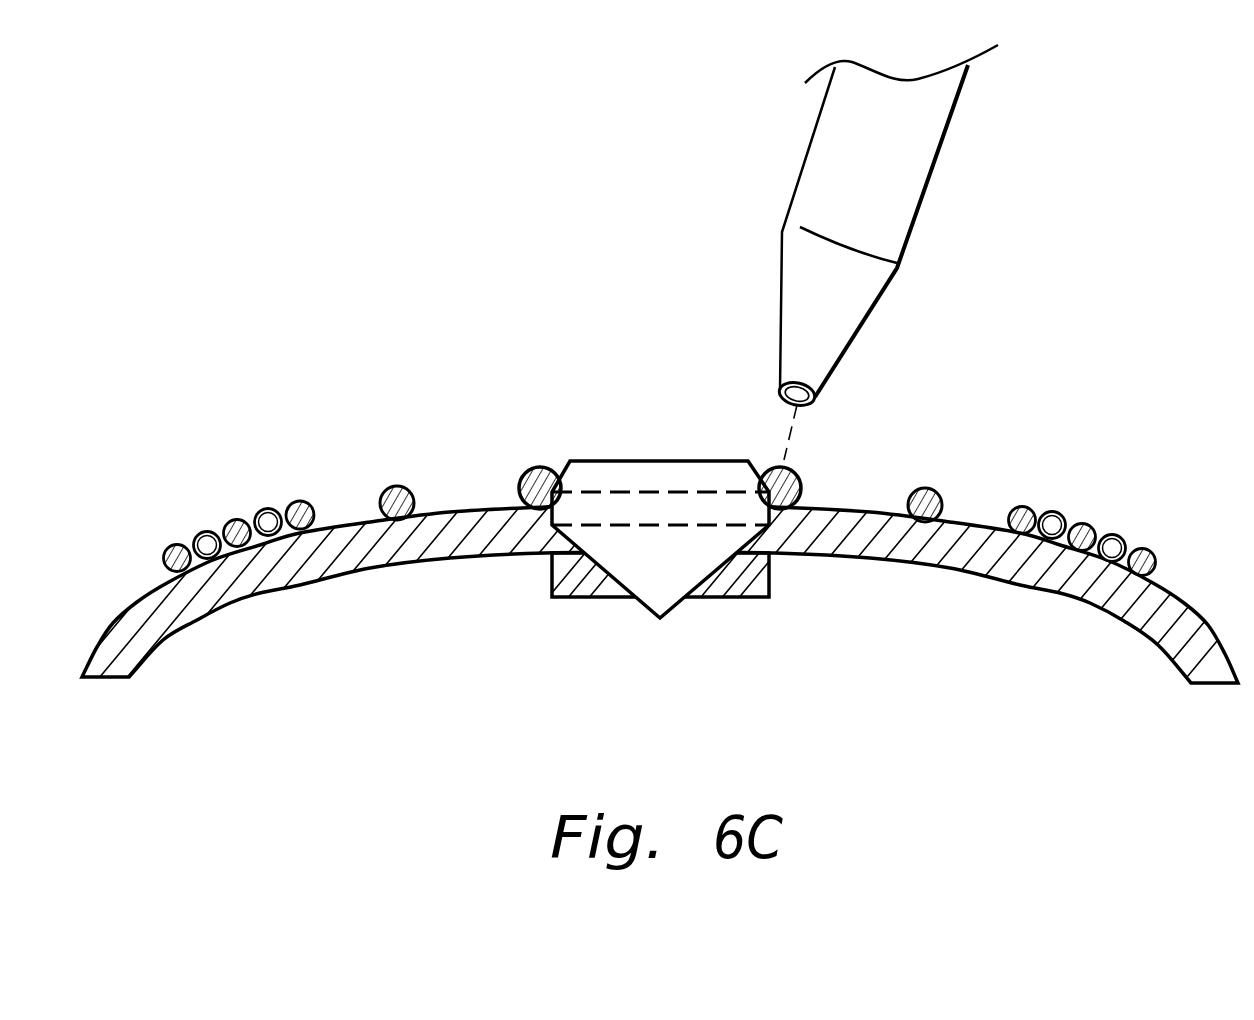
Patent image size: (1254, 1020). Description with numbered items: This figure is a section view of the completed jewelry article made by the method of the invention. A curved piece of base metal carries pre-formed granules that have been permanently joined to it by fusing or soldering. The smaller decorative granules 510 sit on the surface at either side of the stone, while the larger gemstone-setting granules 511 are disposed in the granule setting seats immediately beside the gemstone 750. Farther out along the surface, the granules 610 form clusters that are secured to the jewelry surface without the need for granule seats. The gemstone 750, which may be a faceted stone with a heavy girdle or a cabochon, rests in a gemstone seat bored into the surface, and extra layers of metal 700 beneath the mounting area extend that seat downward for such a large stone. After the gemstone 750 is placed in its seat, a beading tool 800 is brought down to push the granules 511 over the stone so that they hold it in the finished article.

The decorative granules 510 is at (385, 487).
The gemstone-setting granules 511 is at (522, 472).
The granules forming clusters 610 is at (266, 510).
The extra layers of metal 700 is at (580, 587).
The gemstone 750 is at (625, 460).
The beading tool 800 is at (903, 133).